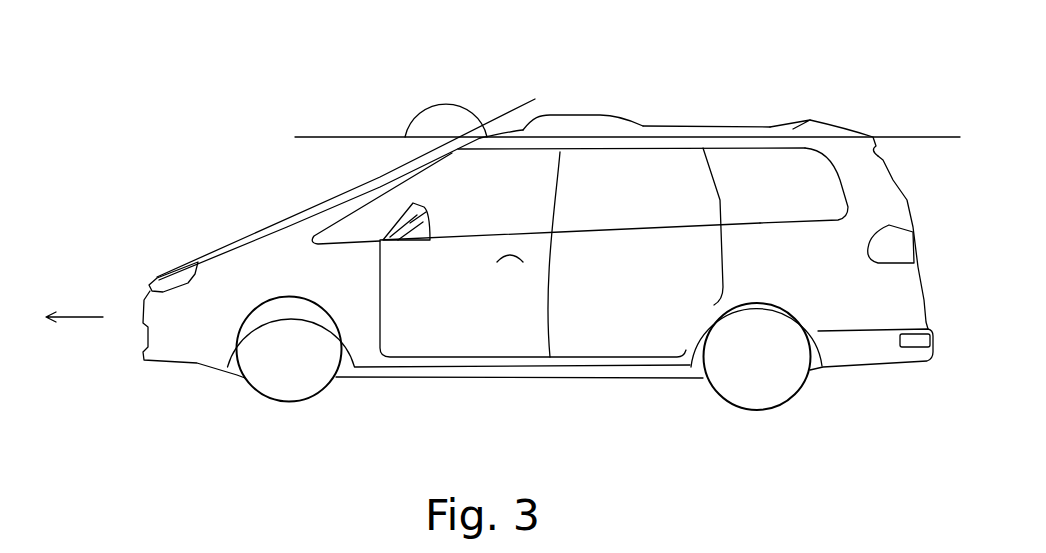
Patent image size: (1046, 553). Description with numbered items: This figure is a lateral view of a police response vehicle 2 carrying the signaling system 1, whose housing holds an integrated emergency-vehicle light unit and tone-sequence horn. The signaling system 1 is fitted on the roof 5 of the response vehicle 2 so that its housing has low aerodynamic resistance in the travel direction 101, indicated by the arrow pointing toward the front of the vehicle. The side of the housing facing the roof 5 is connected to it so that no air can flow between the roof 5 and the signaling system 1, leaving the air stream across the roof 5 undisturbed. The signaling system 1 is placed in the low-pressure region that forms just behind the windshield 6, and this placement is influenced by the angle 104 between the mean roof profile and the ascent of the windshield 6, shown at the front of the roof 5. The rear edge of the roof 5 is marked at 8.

The signaling system 1 is at (572, 118).
The police response vehicle 2 is at (880, 197).
The roof 5 is at (657, 127).
The windshield 6 is at (328, 204).
The rear roof edge / spoiler 8 is at (902, 136).
The travel direction 101 is at (72, 317).
The angle between the mean roof profile and the ascent of the windshield 104 is at (450, 118).